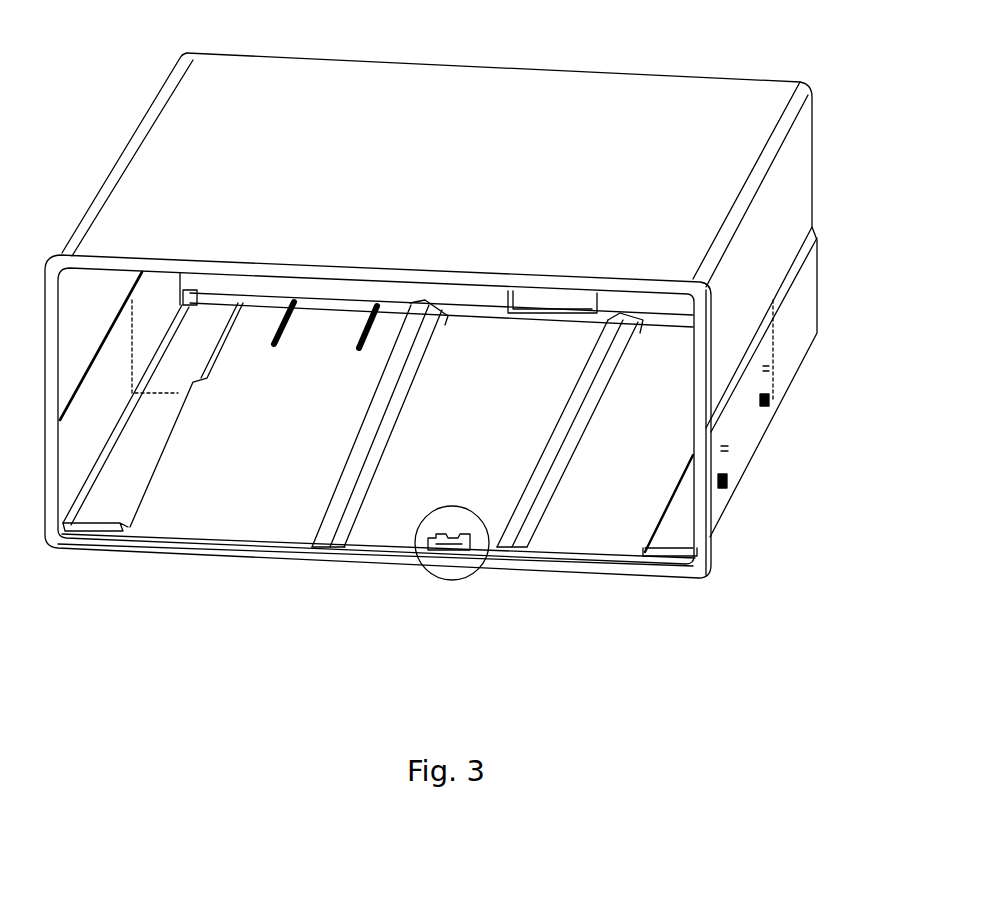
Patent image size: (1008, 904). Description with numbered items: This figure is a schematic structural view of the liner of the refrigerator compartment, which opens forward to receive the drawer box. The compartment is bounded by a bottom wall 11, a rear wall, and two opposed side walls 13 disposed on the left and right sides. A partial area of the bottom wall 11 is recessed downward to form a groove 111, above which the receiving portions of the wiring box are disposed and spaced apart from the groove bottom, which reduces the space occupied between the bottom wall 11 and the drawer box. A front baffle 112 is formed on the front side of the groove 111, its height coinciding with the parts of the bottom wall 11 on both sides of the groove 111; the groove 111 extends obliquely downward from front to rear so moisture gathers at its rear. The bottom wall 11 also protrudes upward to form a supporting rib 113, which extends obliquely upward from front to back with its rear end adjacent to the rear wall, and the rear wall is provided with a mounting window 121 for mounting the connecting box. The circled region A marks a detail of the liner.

The bottom wall 11 is at (183, 525).
The groove 111 is at (363, 537).
The front baffle 112 is at (386, 553).
The supporting rib 113 is at (363, 297).
The mounting window 121 is at (557, 293).
The side wall 13 is at (797, 177).
The detail A is at (468, 573).